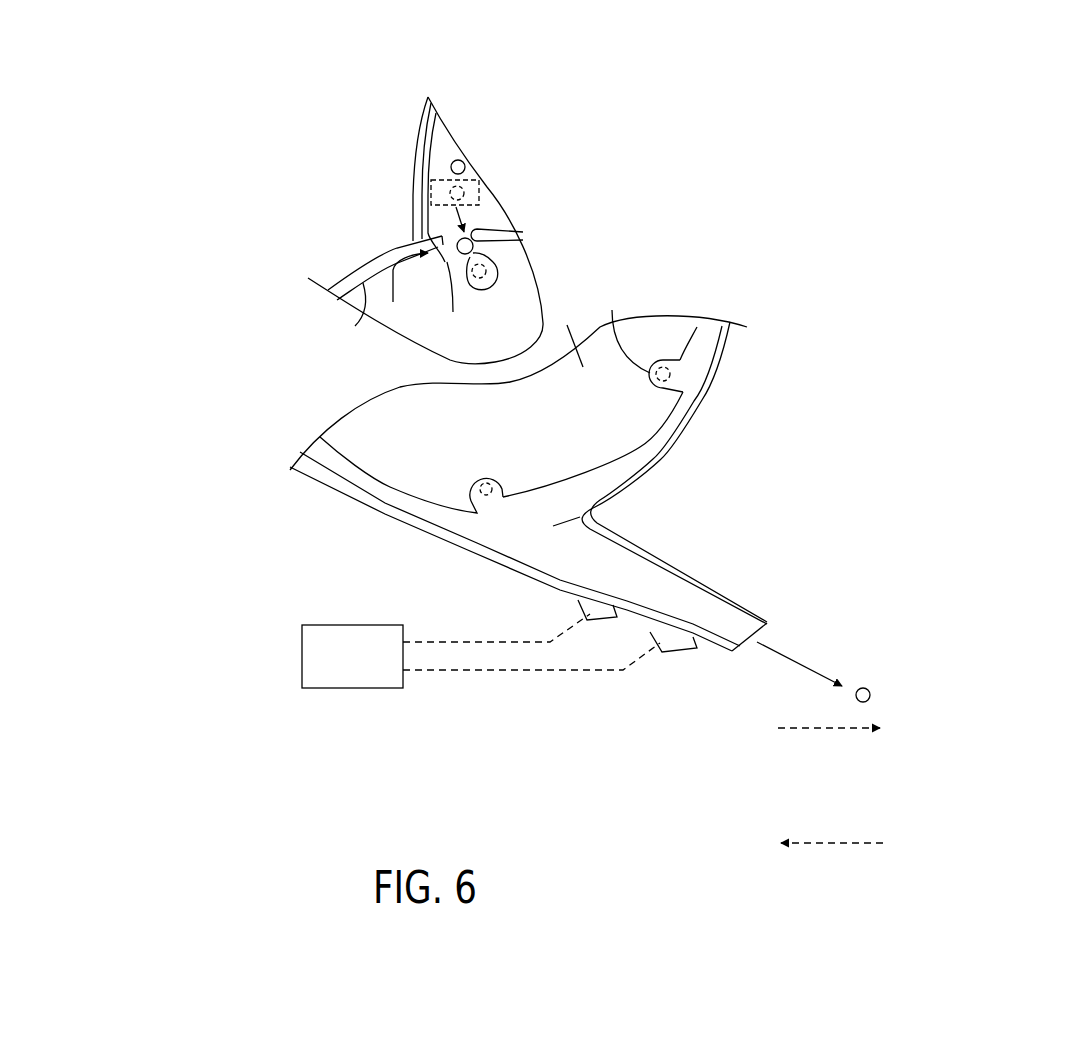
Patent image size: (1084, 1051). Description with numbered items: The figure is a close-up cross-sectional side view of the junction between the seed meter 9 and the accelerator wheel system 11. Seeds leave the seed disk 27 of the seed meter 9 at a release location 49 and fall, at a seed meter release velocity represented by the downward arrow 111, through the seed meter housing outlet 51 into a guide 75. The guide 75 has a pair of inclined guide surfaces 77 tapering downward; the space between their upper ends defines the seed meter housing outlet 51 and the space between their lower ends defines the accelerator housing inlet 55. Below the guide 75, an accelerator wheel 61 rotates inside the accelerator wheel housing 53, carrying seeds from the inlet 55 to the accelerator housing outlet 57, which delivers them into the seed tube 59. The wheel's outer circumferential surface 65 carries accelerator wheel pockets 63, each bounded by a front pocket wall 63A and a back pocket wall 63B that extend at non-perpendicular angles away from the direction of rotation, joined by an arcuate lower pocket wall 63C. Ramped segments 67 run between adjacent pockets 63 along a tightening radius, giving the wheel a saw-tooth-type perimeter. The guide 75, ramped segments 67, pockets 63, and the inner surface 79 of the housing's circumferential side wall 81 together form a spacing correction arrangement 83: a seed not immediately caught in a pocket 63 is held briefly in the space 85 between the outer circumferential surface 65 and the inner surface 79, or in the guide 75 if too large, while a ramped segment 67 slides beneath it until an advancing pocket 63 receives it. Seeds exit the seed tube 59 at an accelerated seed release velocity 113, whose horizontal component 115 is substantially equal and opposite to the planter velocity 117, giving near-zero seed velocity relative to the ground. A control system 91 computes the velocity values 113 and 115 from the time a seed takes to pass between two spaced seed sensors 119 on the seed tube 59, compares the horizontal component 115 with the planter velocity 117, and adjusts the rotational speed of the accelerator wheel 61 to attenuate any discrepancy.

The seed meter 9 is at (352, 60).
The accelerator wheel system 11 is at (282, 520).
The seed disk 27 is at (482, 216).
The release location 49 is at (425, 134).
The seed meter housing outlet 51 is at (476, 236).
The accelerator wheel housing 53 is at (716, 392).
The accelerator housing inlet 55 is at (453, 299).
The accelerator housing outlet 57 is at (584, 515).
The seed tube 59 is at (668, 555).
The accelerator wheel 61 is at (513, 343).
The accelerator wheel pocket 63 is at (660, 355).
The front pocket wall 63A is at (677, 358).
The back pocket wall 63B is at (668, 402).
The lower pocket wall 63C is at (490, 477).
The outer circumferential surface 65 is at (350, 292).
The ramped segment 67 is at (521, 252).
The guide 75 is at (491, 214).
The guide surfaces 77 is at (394, 212).
The inner surface 79 is at (340, 297).
The circumferential side wall 81 is at (355, 265).
The spacing correction arrangement 83 is at (404, 290).
The space 85 is at (355, 326).
The control system 91 is at (353, 625).
The seed meter release velocity arrow 111 is at (456, 207).
The accelerated seed release velocity 113 is at (838, 678).
The horizontal velocity component 115 is at (798, 733).
The planter velocity 117 is at (805, 847).
The seed sensors 119 is at (578, 612).